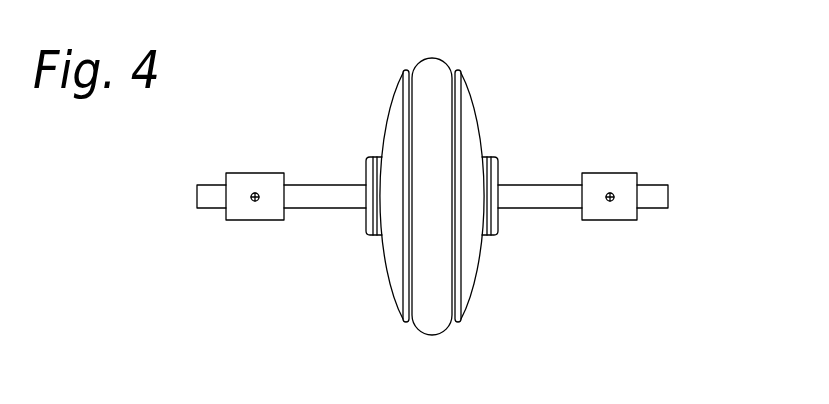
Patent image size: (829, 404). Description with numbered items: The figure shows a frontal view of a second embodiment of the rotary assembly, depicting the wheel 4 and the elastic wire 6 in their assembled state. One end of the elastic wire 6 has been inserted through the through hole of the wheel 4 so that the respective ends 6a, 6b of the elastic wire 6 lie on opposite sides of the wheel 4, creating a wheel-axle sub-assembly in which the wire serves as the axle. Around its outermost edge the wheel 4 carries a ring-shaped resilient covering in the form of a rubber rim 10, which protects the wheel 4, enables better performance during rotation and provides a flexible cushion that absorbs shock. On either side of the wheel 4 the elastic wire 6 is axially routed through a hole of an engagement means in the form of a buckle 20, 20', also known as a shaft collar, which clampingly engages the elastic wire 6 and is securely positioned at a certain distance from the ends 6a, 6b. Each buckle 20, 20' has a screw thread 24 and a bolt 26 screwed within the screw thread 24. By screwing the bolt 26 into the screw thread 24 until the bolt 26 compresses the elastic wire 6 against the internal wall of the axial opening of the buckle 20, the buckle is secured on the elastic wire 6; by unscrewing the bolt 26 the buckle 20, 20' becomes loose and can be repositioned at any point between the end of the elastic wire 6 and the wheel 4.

The wheel 4 is at (470, 127).
The rubber rim 10 is at (434, 72).
The elastic wire 6 is at (530, 198).
The end of the elastic wire 6a is at (655, 188).
The end of the elastic wire 6b is at (203, 192).
The buckle 20 is at (243, 219).
The buckle 20' is at (613, 176).
The screw thread 24 is at (258, 201).
The bolt 26 is at (252, 193).